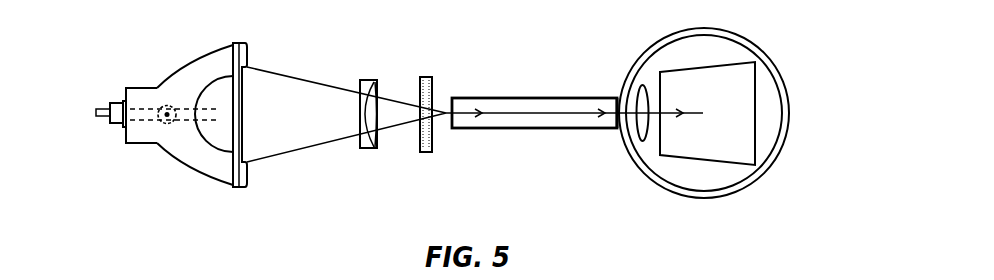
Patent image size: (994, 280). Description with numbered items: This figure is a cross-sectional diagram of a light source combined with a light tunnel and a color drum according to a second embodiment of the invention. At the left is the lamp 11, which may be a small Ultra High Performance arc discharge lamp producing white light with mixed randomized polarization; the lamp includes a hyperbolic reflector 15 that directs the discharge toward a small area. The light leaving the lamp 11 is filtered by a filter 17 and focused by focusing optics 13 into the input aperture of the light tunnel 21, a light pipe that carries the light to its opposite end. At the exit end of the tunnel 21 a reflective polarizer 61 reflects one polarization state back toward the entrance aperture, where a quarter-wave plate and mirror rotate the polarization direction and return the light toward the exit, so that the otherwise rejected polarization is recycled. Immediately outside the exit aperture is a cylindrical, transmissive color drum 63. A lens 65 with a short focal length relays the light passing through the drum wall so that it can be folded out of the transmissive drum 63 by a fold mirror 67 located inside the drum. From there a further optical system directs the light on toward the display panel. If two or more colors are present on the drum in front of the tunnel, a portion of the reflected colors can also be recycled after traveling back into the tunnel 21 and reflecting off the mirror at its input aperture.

The lamp 11 is at (171, 126).
The focusing optics 13 is at (373, 80).
The hyperbolic reflector 15 is at (195, 52).
The filter 17 is at (430, 77).
The light tunnel 21 is at (537, 98).
The reflective polarizer 61 is at (615, 130).
The color drum 63 is at (765, 53).
The lens 65 is at (650, 75).
The fold mirror 67 is at (747, 143).